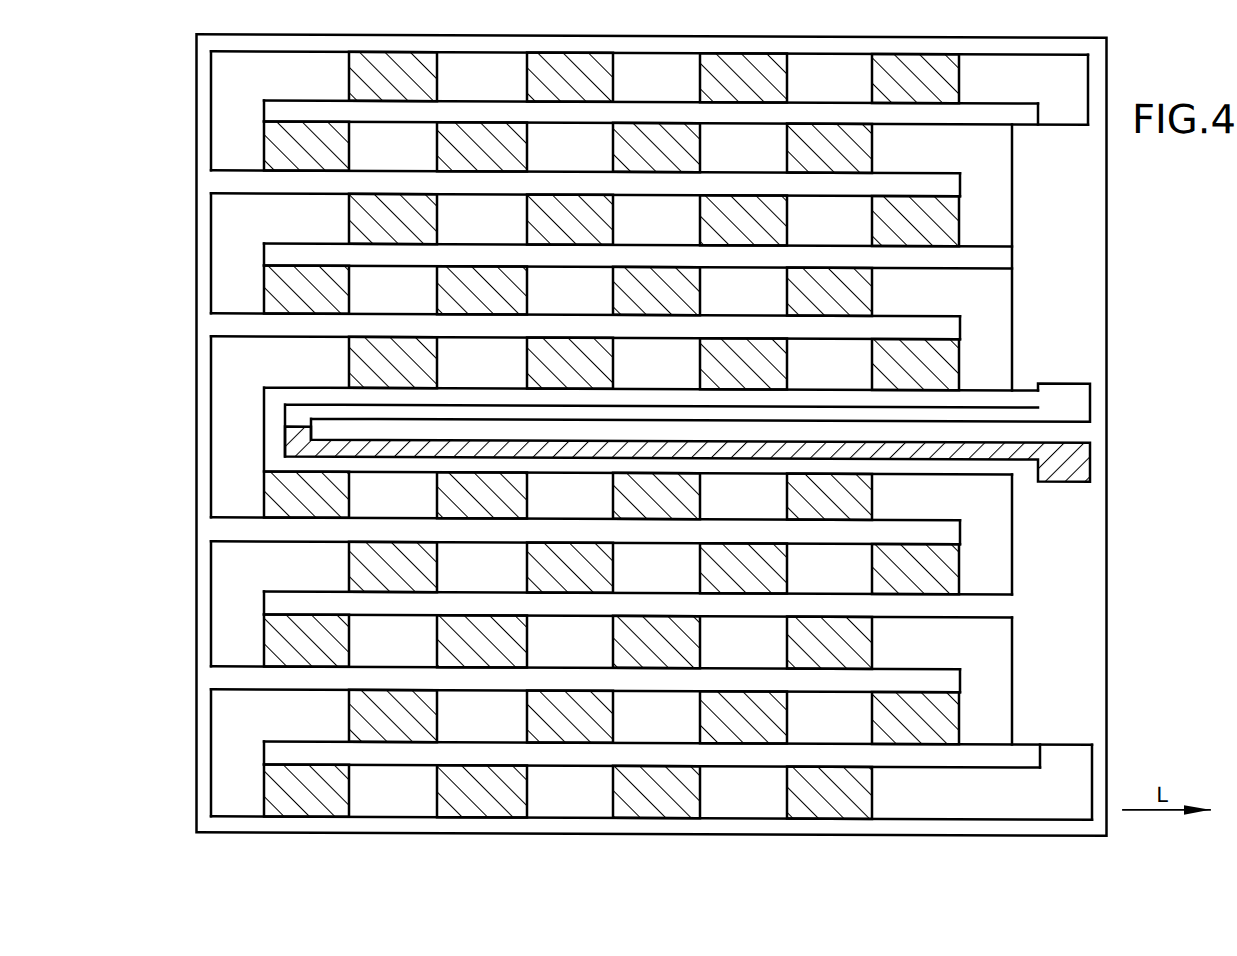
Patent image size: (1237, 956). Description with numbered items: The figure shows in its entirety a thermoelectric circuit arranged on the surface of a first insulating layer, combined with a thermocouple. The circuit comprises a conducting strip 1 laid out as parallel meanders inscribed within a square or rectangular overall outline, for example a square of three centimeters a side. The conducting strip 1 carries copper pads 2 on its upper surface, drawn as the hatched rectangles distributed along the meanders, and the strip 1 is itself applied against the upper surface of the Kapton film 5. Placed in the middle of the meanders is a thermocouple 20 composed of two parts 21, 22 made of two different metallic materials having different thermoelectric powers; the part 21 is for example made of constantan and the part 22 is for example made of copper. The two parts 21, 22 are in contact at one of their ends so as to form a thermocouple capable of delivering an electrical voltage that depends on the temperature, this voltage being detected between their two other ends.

The conducting strip 1 is at (997, 301).
The copper pads 2 is at (287, 288).
The Kapton film 5 is at (1053, 588).
The thermocouple 20 is at (1165, 365).
The first part of the thermocouple 21 is at (1078, 398).
The second part of the thermocouple 22 is at (1075, 456).